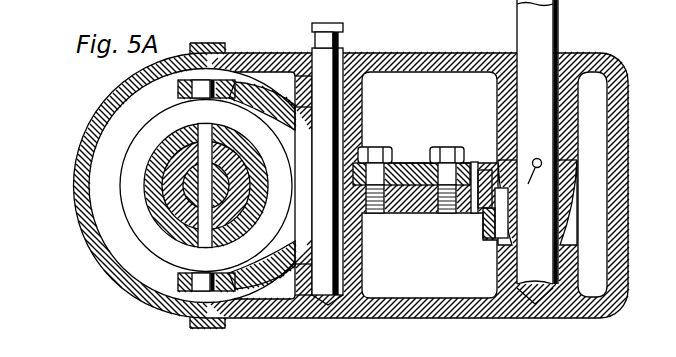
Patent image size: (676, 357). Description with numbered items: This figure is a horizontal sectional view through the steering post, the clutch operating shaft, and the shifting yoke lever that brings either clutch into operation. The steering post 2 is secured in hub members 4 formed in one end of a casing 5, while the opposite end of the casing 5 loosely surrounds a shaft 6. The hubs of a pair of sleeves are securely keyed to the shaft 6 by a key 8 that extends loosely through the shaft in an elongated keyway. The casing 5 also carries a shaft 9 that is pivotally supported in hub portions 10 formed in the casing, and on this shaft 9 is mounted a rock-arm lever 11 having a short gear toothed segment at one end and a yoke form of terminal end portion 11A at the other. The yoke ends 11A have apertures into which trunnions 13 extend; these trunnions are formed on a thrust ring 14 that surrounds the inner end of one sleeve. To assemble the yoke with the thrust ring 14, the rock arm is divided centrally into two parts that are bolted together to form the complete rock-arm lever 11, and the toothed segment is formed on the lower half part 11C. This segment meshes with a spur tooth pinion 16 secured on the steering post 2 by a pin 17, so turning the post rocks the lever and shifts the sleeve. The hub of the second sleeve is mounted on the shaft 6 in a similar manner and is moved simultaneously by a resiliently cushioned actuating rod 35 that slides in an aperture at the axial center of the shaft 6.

The steering post 2 is at (543, 25).
The hub members 4 is at (496, 101).
The casing 5 is at (423, 53).
The shaft 6 is at (143, 171).
The key 8 is at (200, 137).
The shaft 9 is at (345, 27).
The hub portions 10 is at (399, 99).
The rock-arm lever 11 is at (408, 167).
The yoke terminal end portion 11A is at (260, 90).
The lower half part of rock arm 11C is at (481, 227).
The trunnions 13 is at (206, 90).
The thrust ring 14 is at (127, 193).
The spur tooth pinion 16 is at (572, 185).
The pin 17 is at (532, 182).
The resiliently cushioned actuating rod 35 is at (147, 213).